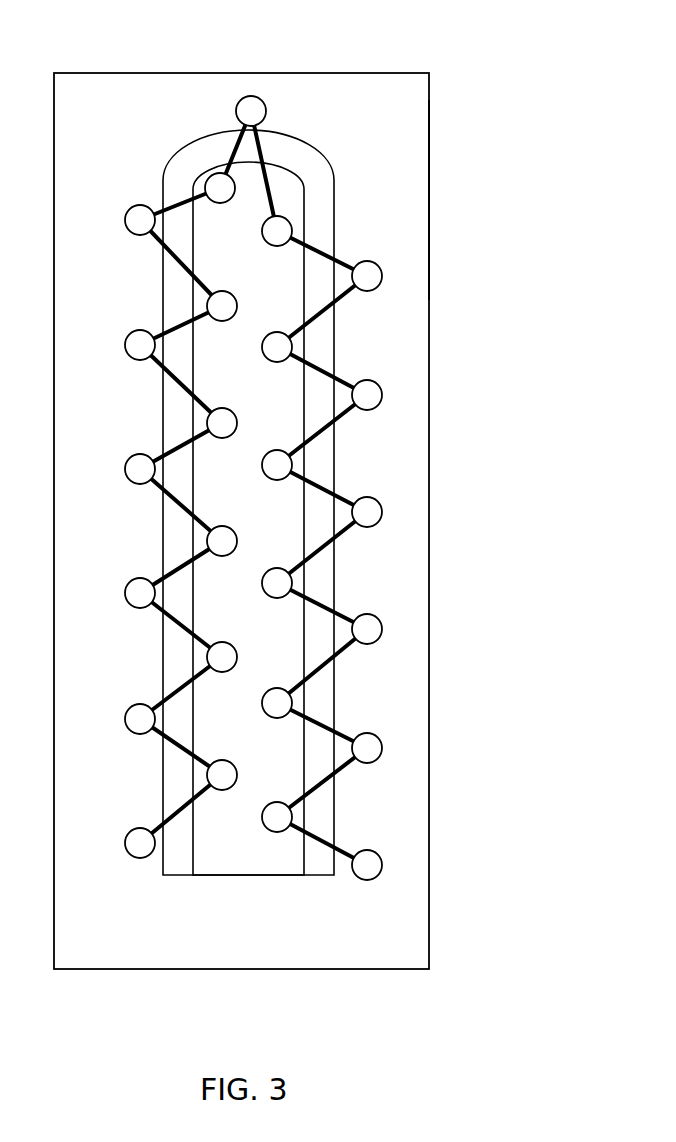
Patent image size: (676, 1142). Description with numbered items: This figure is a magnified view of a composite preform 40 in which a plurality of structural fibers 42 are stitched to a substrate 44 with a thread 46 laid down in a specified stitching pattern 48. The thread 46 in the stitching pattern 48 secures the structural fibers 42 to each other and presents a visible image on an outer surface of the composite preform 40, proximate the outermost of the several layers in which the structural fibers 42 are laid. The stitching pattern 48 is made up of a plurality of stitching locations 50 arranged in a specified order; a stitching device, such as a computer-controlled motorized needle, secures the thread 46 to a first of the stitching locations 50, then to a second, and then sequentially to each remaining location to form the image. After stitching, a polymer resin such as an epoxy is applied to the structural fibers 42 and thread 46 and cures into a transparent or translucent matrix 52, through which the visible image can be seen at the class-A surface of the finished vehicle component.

The composite preform 40 is at (311, 488).
The structural fibers 42 is at (305, 153).
The substrate 44 is at (113, 72).
The thread 46 is at (352, 504).
The stitching pattern 48 is at (125, 866).
The stitching locations 50 is at (250, 96).
The transparent or translucent matrix 52 is at (427, 153).